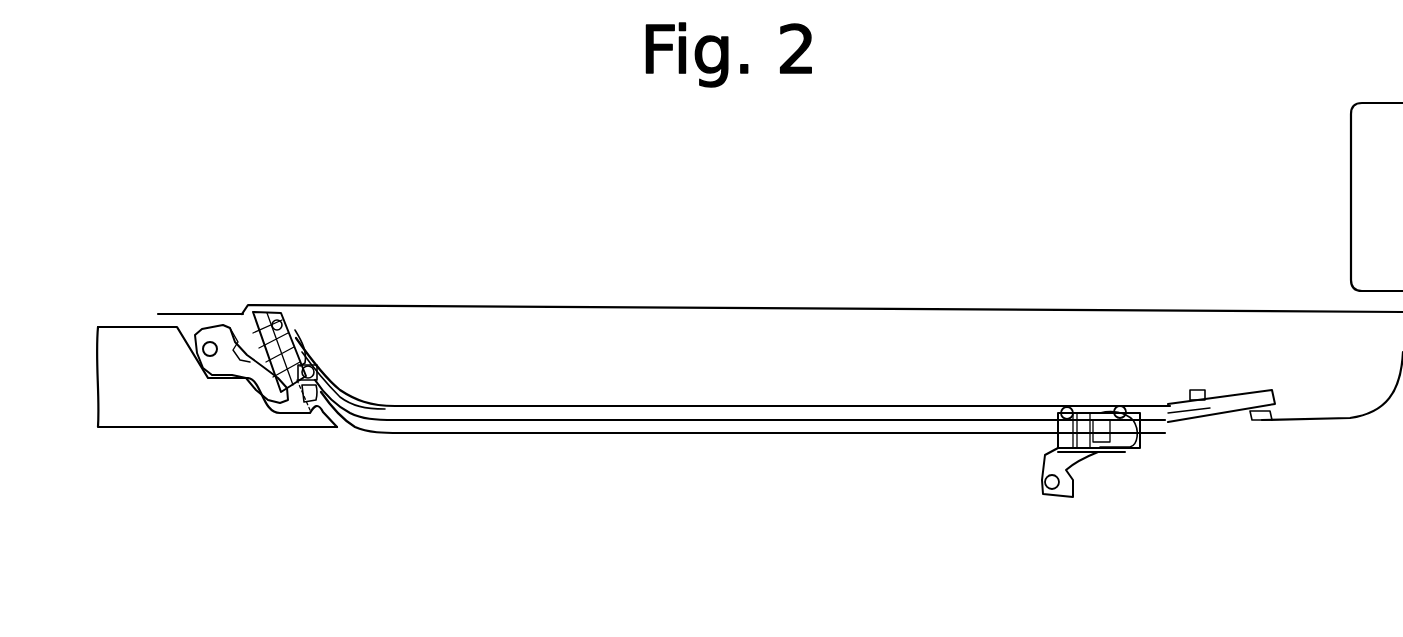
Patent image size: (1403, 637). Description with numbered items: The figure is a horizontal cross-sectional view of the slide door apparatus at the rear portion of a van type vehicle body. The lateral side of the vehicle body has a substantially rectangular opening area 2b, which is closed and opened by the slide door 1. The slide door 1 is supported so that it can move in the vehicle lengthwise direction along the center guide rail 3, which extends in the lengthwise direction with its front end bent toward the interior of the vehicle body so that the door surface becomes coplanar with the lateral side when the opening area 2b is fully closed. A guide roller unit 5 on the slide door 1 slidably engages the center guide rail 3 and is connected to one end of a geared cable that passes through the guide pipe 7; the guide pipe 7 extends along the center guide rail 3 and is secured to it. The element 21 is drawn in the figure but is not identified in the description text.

The slide door 1 is at (183, 428).
The ledge / upper body panel 21 is at (170, 313).
The guide roller unit 5 is at (219, 310).
The center guide rail 3 is at (695, 427).
The opening area 2b is at (822, 407).
The guide pipe 7 is at (1210, 413).